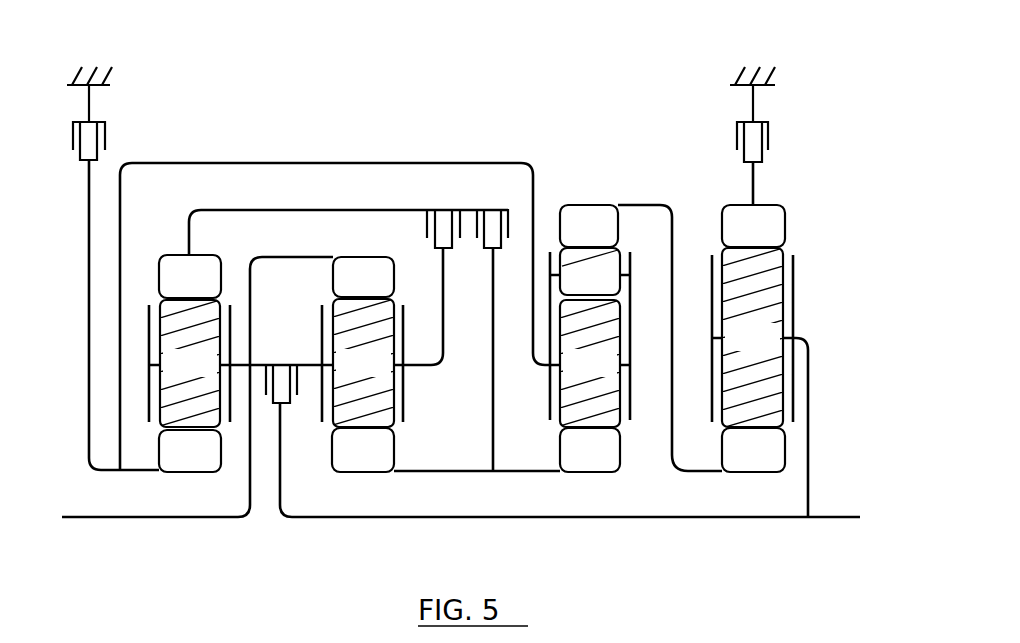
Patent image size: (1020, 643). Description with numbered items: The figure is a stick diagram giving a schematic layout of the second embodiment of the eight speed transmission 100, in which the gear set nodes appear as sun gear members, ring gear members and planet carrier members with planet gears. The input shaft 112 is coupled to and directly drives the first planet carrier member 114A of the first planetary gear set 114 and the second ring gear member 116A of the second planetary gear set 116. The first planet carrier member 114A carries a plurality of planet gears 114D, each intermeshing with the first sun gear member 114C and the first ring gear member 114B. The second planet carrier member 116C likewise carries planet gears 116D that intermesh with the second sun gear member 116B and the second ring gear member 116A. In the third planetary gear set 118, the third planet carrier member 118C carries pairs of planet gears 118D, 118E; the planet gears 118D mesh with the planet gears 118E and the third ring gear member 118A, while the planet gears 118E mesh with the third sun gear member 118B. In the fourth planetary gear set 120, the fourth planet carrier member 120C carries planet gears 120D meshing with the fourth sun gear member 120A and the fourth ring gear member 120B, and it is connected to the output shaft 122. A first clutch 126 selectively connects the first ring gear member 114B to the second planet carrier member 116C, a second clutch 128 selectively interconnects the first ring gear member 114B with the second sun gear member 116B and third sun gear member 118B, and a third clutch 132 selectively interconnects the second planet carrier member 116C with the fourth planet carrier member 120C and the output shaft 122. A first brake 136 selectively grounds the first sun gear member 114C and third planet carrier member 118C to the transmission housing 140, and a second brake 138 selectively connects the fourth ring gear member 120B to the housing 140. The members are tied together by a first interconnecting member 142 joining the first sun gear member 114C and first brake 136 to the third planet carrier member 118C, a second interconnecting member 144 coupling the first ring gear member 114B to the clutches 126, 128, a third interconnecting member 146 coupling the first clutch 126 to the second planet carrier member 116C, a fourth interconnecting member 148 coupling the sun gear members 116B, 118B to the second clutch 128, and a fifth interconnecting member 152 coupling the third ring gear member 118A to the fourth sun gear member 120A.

The eight speed transmission 100 is at (628, 78).
The input shaft 112 is at (127, 517).
The first planetary gear set 114 is at (197, 381).
The first planet carrier member 114A is at (148, 403).
The first ring gear member 114B is at (213, 287).
The first sun gear member 114C is at (213, 462).
The planet gears 114D is at (213, 374).
The second planetary gear set 116 is at (404, 429).
The second ring gear member 116A is at (387, 288).
The second sun gear member 116B is at (386, 461).
The second planet carrier member 116C is at (403, 405).
The planet gears 116D is at (387, 374).
The third planetary gear set 118 is at (532, 403).
The third ring gear member 118A is at (611, 237).
The third sun gear member 118B is at (613, 461).
The third planet carrier member 118C is at (550, 388).
The planet gears 118D is at (613, 288).
The planet gears 118E is at (613, 374).
The fourth planetary gear set 120 is at (781, 403).
The fourth sun gear member 120A is at (777, 461).
The fourth ring gear member 120B is at (777, 237).
The fourth planet carrier member 120C is at (797, 317).
The planet gears 120D is at (777, 348).
The output shaft 122 is at (828, 513).
The first clutch 126 is at (440, 210).
The second clutch 128 is at (487, 210).
The third clutch 132 is at (292, 365).
The first brake 136 is at (105, 125).
The second brake 138 is at (768, 125).
The transmission housing 140 is at (95, 87).
The first interconnecting member 142 is at (220, 163).
The second interconnecting member 144 is at (275, 210).
The third interconnecting member 146 is at (447, 293).
The fourth interconnecting member 148 is at (490, 442).
The fifth interconnecting member 152 is at (667, 428).